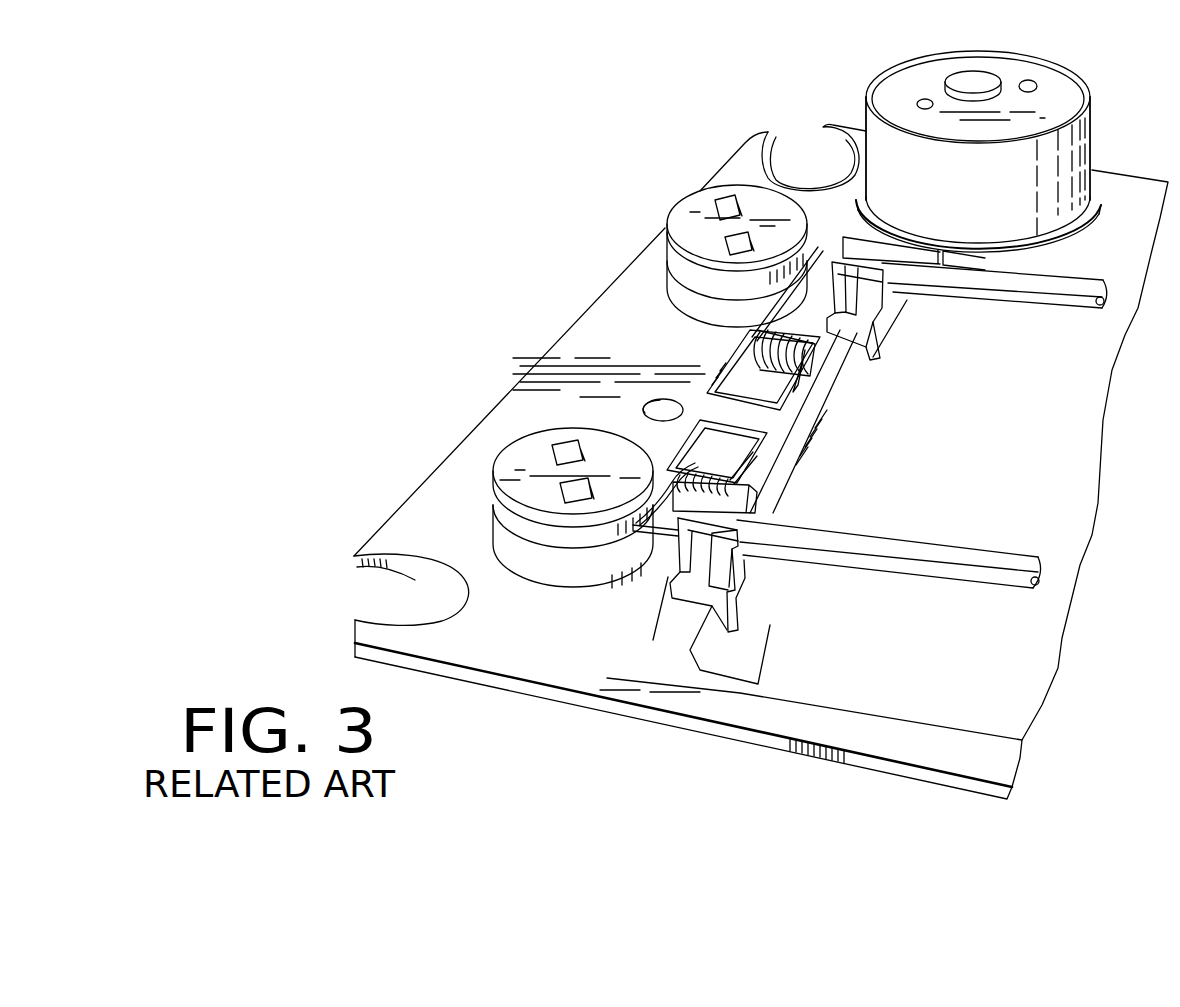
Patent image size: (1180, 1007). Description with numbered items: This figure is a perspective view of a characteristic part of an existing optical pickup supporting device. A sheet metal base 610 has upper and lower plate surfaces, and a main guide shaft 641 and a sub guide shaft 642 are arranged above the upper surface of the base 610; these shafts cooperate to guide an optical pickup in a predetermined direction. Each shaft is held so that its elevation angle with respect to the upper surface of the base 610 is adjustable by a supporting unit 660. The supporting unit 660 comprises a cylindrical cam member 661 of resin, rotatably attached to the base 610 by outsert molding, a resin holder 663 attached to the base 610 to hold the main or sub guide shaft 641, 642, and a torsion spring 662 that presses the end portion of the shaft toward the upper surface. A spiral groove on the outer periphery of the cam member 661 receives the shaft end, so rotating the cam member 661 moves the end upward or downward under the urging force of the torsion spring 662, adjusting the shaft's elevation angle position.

The sheet metal base 610 is at (597, 343).
The main guide shaft 641 is at (1000, 286).
The sub guide shaft 642 is at (962, 558).
The supporting unit 660 is at (769, 789).
The cylindrical cam member 661 is at (583, 577).
The torsion spring 662 is at (668, 563).
The holder 663 is at (745, 587).